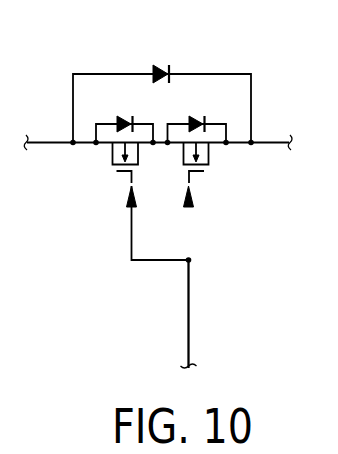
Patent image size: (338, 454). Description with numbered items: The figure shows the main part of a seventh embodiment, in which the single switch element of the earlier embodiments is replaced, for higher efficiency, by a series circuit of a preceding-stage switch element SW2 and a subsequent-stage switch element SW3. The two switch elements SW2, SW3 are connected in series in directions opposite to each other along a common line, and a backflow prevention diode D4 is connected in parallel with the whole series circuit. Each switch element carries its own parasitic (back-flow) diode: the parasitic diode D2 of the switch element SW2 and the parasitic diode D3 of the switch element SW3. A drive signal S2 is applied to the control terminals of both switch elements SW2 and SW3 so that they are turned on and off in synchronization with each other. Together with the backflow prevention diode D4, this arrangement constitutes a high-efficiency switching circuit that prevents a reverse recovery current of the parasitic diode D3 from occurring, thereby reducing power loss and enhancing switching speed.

The backflow prevention diode D4 is at (168, 65).
The parasitic diode D2 is at (126, 117).
The parasitic diode D3 is at (197, 117).
The switch element SW2 is at (112, 163).
The switch element SW3 is at (209, 163).
The drive signal S2 is at (190, 316).